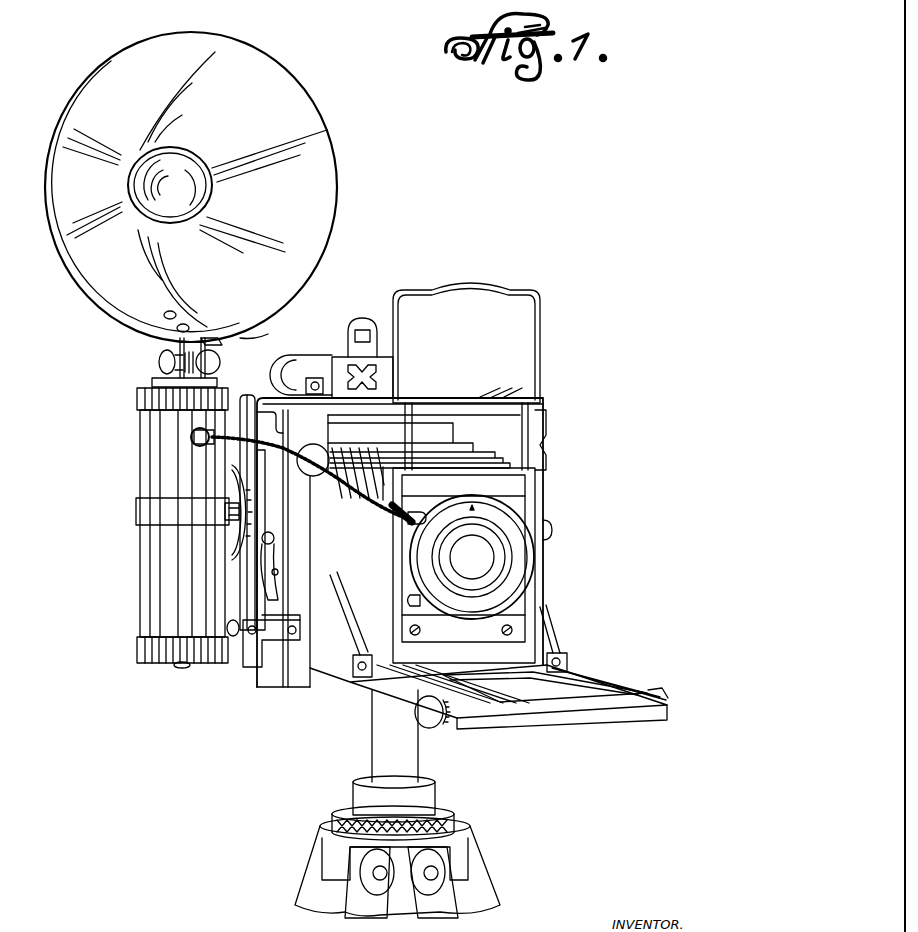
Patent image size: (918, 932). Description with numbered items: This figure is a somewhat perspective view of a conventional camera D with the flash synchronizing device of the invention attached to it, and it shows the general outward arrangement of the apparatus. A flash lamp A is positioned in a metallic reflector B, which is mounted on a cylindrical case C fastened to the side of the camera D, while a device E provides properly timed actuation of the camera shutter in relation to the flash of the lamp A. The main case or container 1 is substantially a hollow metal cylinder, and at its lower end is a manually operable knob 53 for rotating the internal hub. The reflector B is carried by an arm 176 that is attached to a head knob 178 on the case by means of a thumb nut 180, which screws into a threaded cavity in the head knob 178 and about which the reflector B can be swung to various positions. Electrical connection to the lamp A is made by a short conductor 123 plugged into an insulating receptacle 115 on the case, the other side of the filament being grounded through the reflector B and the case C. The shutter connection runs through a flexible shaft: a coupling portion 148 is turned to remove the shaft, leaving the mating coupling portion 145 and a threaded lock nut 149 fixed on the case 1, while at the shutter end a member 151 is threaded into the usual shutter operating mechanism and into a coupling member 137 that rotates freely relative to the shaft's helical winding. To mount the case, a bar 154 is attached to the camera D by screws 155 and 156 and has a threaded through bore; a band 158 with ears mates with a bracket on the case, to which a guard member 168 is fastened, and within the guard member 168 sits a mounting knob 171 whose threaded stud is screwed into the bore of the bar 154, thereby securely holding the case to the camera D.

The flash lamp A is at (206, 168).
The reflector B is at (313, 212).
The cylindrical case C is at (150, 470).
The camera D is at (548, 428).
The shutter actuating device E is at (244, 405).
The main case 1 is at (160, 512).
The manually operable knob 53 is at (133, 650).
The plug receiving insulating receptacle 115 is at (220, 383).
The short electrical conductor 123 is at (262, 330).
The coupling member 137 is at (410, 512).
The coupling portion 145 is at (185, 444).
The coupling portion 148 is at (202, 452).
The threaded lock nut 149 is at (192, 433).
The shutter connection member 151 is at (440, 505).
The bar 154 is at (250, 613).
The screw 155 is at (285, 642).
The screw 156 is at (316, 378).
The band 158 is at (137, 512).
The guard member 168 is at (243, 550).
The mounting knob 171 is at (250, 513).
The arm 176 is at (187, 344).
The head knob 178 is at (160, 362).
The thumb nut 180 is at (213, 340).